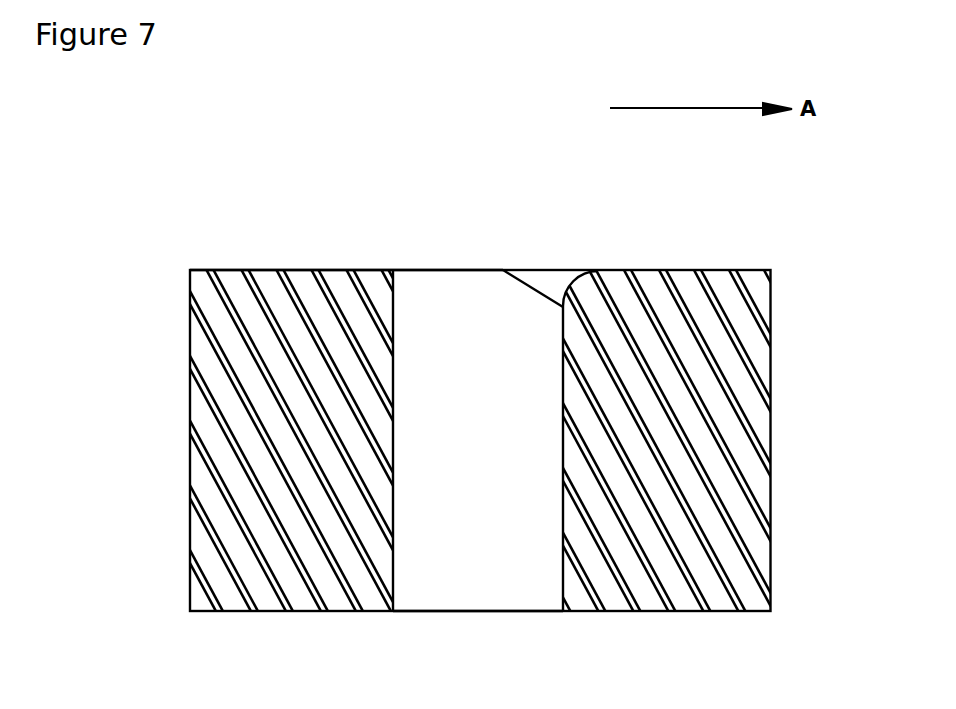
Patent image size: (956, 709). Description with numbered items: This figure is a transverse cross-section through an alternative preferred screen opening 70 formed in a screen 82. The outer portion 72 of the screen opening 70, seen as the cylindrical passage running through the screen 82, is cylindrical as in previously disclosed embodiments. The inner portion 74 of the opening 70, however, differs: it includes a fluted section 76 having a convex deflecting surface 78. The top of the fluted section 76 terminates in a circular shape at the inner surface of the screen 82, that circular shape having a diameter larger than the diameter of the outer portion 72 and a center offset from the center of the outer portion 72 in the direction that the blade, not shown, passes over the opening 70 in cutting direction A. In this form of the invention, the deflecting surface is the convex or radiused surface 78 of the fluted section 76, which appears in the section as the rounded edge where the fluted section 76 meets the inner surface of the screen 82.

The screen opening 70 is at (439, 150).
The outer portion 72 is at (490, 592).
The inner portion 74 is at (448, 293).
The fluted section 76 is at (541, 262).
The convex deflecting surface 78 is at (598, 272).
The screen 82 is at (233, 270).